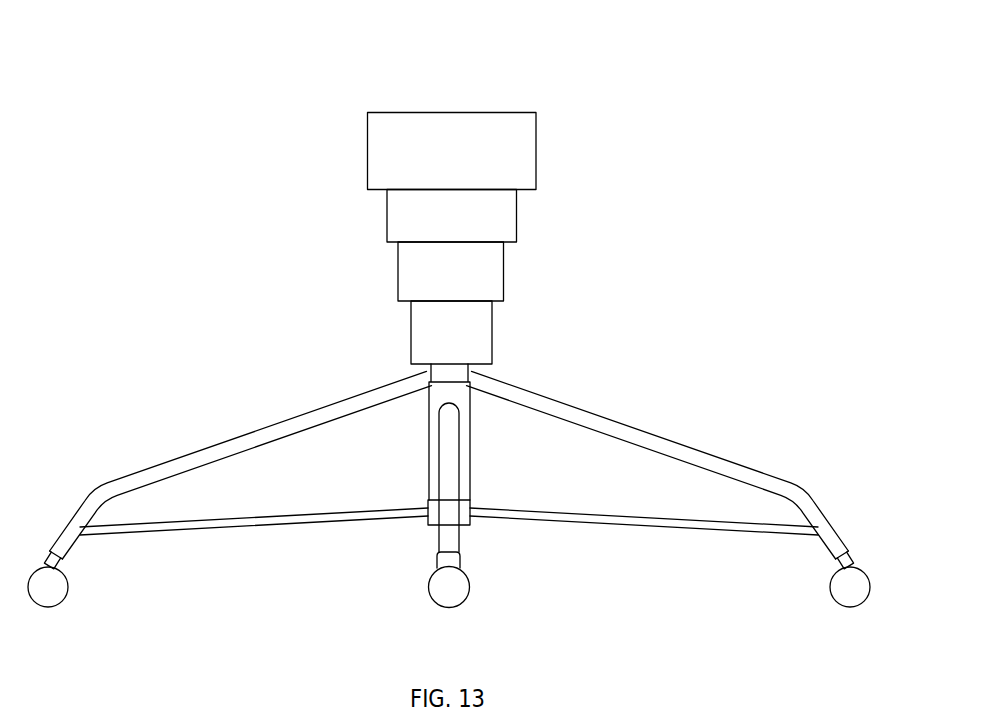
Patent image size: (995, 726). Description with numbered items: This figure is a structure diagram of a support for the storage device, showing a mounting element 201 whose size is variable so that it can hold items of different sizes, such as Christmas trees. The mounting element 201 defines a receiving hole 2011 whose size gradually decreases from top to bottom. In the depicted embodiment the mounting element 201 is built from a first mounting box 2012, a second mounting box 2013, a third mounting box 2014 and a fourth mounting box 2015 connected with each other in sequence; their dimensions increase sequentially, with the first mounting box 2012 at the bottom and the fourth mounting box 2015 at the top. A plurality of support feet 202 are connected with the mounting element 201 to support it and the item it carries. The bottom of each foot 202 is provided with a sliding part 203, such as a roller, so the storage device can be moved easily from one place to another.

The mounting element 201 is at (300, 257).
The receiving hole 2011 is at (437, 103).
The first mounting box 2012 is at (477, 327).
The second mounting box 2013 is at (492, 277).
The third mounting box 2014 is at (500, 208).
The fourth mounting box 2015 is at (520, 133).
The support feet 202 is at (163, 457).
The sliding part 203 is at (63, 603).